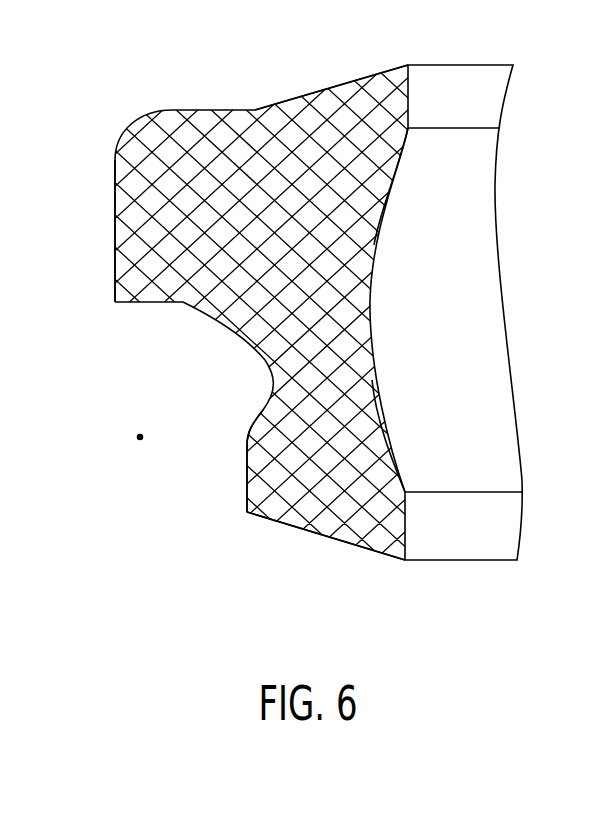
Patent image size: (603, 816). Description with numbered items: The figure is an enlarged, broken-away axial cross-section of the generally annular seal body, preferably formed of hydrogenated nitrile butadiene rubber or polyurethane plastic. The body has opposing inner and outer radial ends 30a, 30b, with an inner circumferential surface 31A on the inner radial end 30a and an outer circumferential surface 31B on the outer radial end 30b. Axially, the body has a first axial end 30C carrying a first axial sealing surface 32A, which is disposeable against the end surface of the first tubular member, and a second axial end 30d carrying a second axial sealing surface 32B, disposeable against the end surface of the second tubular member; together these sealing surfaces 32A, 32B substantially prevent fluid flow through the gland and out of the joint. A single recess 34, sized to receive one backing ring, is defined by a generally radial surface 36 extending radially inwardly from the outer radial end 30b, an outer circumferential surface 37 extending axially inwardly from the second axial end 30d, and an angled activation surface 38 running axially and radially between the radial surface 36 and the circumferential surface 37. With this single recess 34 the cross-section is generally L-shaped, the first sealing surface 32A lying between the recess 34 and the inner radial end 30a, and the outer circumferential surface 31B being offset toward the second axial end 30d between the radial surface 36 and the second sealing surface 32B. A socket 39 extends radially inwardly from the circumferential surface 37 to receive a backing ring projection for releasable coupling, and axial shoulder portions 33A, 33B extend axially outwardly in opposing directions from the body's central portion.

The inner radial end 30a is at (366, 298).
The outer radial end 30b is at (116, 193).
The first axial end 30C is at (282, 524).
The second axial end 30d is at (347, 88).
The inner circumferential surface 31A is at (512, 342).
The outer circumferential surface 31B is at (116, 250).
The first axial sealing surface 32A is at (356, 546).
The second axial sealing surface 32B is at (302, 95).
The axial shoulder portion 33A is at (372, 472).
The axial shoulder portion 33B is at (367, 187).
The recess 34 is at (138, 439).
The radial surface 36 is at (150, 302).
The outer circumferential surface 37 is at (247, 450).
The angled activation surface 38 is at (208, 318).
The socket 39 is at (268, 378).